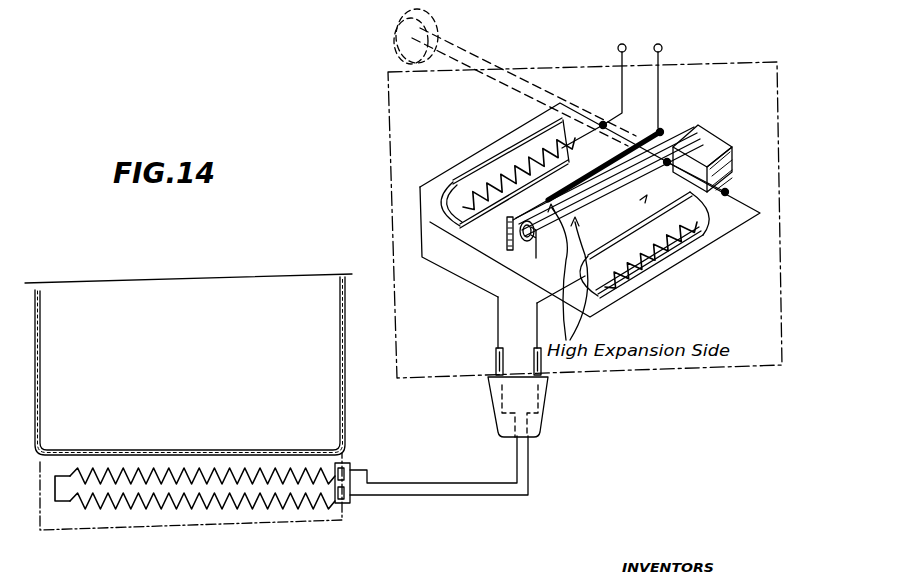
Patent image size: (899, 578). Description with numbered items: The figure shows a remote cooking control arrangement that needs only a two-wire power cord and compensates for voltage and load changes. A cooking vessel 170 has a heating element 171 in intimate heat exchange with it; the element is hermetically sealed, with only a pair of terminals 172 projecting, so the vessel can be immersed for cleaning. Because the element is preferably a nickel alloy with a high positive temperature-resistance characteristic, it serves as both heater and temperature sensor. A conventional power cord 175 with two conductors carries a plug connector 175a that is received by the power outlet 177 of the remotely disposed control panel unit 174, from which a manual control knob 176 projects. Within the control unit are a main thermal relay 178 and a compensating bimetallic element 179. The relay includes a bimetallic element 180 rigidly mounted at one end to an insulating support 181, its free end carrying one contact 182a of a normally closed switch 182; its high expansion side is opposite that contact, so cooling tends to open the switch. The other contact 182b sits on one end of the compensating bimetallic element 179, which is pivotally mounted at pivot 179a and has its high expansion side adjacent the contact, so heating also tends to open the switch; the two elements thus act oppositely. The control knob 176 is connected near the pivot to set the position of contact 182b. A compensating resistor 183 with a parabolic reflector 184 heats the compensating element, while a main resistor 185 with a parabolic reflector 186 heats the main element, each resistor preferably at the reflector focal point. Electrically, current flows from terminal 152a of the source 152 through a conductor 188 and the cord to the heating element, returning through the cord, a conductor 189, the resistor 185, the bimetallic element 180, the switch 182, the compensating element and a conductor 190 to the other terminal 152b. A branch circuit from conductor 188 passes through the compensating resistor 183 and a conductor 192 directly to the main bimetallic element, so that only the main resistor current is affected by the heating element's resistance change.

The source of alternating current power 152 is at (643, 68).
The terminal of the source 152a is at (618, 48).
The other terminal of the power source 152b is at (646, 27).
The cooking vessel 170 is at (28, 308).
The heating element 171 is at (181, 505).
The terminals 172 is at (348, 490).
The control panel unit 174 is at (627, 374).
The power cord 175 is at (453, 485).
The plug connector 175a is at (493, 421).
The manual control knob 176 is at (408, 65).
The power outlet 177 is at (538, 350).
The main thermal relay 178 is at (727, 192).
The compensating bimetallic element 179 is at (592, 166).
The pivot 179a is at (626, 133).
The bimetallic element 180 is at (675, 133).
The insulating support 181 is at (720, 138).
The normally closed switch 182 is at (501, 252).
The contact 182a is at (548, 247).
The other contact 182b is at (508, 245).
The compensating resistor 183 is at (510, 152).
The parabolic reflector 184 is at (478, 168).
The main resistor 185 is at (656, 270).
The parabolic reflector 186 is at (700, 222).
The conductor 188 is at (528, 122).
The conductor 189 is at (540, 304).
The conductor 190 is at (660, 102).
The conductor 192 is at (612, 297).